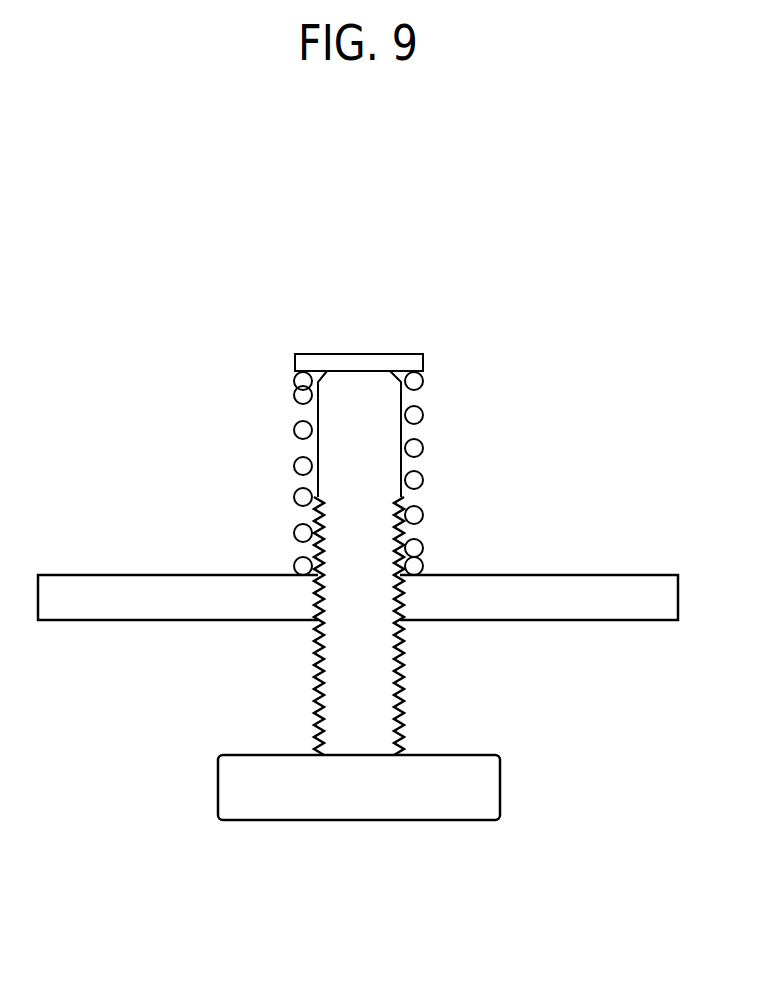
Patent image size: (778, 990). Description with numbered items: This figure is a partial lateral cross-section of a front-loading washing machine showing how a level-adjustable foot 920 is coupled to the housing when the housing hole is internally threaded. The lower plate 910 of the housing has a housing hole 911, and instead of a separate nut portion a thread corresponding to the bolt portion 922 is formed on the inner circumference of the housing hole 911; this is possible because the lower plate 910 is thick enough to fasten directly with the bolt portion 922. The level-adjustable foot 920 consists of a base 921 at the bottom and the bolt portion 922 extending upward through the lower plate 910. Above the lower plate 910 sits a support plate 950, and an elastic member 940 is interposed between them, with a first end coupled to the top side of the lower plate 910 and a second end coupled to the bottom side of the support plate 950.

The lower plate 910 is at (660, 578).
The housing hole 911 is at (398, 588).
The level-adjustable foot 920 is at (111, 702).
The base 921 is at (222, 770).
The bolt portion 922 is at (332, 693).
The elastic member 940 is at (286, 378).
The support plate 950 is at (355, 358).